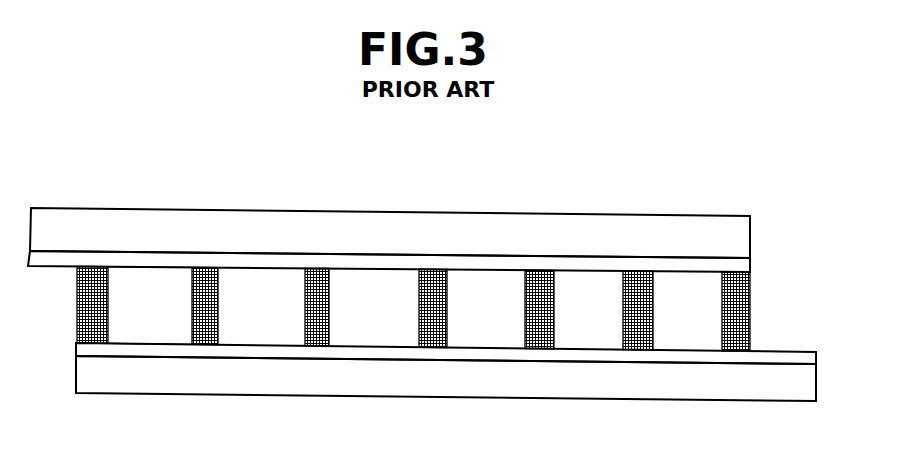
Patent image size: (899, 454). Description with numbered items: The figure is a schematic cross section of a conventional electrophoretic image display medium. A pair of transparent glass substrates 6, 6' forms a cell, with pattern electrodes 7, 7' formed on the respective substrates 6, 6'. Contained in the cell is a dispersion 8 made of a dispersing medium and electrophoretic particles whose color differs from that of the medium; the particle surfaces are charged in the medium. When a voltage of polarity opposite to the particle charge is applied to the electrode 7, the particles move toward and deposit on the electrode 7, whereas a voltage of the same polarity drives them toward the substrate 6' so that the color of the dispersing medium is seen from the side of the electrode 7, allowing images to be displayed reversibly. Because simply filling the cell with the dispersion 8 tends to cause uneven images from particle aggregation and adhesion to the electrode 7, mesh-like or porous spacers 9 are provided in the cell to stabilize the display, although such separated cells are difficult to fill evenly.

The transparent substrate 6 is at (412, 233).
The pattern electrode 7 is at (413, 259).
The dispersion 8 is at (134, 282).
The spacer 9 is at (203, 270).
The pattern electrode 7' is at (470, 368).
The transparent substrate 6' is at (470, 389).